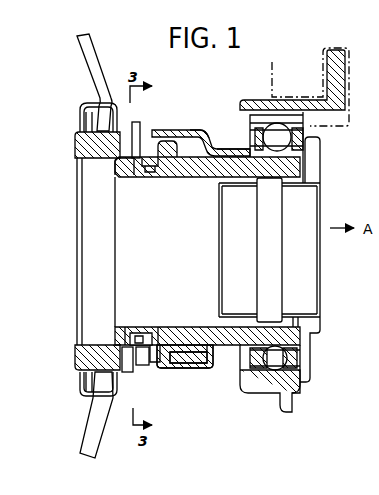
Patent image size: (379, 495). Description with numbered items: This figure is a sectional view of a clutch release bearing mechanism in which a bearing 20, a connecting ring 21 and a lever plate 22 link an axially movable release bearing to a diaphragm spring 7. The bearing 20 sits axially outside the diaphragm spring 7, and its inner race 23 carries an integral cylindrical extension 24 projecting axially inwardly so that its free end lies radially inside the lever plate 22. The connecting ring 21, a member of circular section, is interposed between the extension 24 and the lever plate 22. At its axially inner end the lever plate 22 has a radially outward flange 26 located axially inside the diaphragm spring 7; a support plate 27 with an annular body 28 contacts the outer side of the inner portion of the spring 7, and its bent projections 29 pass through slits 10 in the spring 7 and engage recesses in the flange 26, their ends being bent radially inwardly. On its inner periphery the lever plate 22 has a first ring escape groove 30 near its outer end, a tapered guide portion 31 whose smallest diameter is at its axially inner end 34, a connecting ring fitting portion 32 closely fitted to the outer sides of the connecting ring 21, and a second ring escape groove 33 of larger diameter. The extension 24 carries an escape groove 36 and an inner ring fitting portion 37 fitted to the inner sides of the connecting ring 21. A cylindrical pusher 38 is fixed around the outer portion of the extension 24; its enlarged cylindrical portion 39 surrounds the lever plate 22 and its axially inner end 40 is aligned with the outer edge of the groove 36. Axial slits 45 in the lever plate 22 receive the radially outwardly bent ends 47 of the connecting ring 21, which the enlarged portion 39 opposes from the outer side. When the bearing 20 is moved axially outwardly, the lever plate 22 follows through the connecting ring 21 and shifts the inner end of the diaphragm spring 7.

The diaphragm spring 7 is at (98, 40).
The slits 10 is at (87, 61).
The bearing 20 is at (251, 97).
The connecting ring 21 is at (135, 328).
The lever plate 22 is at (74, 143).
The inner race 23 is at (304, 162).
The cylindrical extension 24 is at (175, 178).
The radially outward flange 26 is at (85, 372).
The support plate 27 is at (73, 398).
The annular body 28 is at (114, 403).
The bent projections 29 is at (79, 389).
The first ring escape groove 30 is at (174, 370).
The guide portion 31 is at (171, 368).
The connecting ring fitting portion 32 is at (135, 365).
The second ring escape groove 33 is at (123, 372).
The axially inner end 34 is at (150, 332).
The escape groove 36 is at (150, 174).
The inner ring fitting portion 37 is at (136, 178).
The cylindrical pusher 38 is at (223, 144).
The enlarged cylindrical portion 39 is at (199, 130).
The axially inner end 40 is at (160, 130).
The slits 45 is at (176, 173).
The ends 47 is at (137, 122).